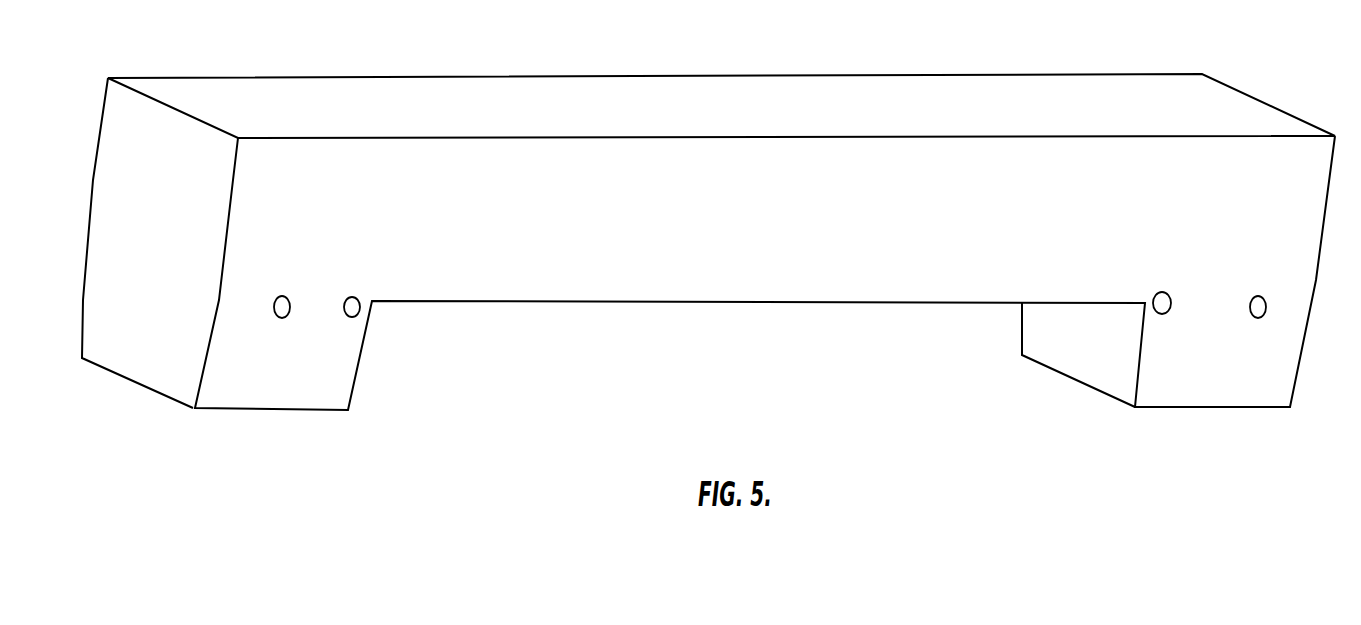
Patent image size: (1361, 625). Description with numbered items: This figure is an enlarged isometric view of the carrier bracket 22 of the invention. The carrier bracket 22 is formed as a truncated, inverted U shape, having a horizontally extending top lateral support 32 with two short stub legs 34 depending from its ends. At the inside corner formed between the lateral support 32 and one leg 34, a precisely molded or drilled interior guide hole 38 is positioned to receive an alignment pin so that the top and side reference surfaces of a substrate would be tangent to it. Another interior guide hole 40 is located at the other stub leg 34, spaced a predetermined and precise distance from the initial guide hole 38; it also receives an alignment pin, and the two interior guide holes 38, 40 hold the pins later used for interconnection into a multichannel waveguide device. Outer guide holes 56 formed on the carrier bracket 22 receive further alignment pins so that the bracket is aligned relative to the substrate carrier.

The carrier bracket 22 is at (920, 87).
The top lateral support 32 is at (691, 215).
The stub leg 34 is at (1187, 397).
The interior guide hole 38 is at (1163, 315).
The interior guide hole 40 is at (358, 303).
The outer guide hole 56 is at (288, 318).